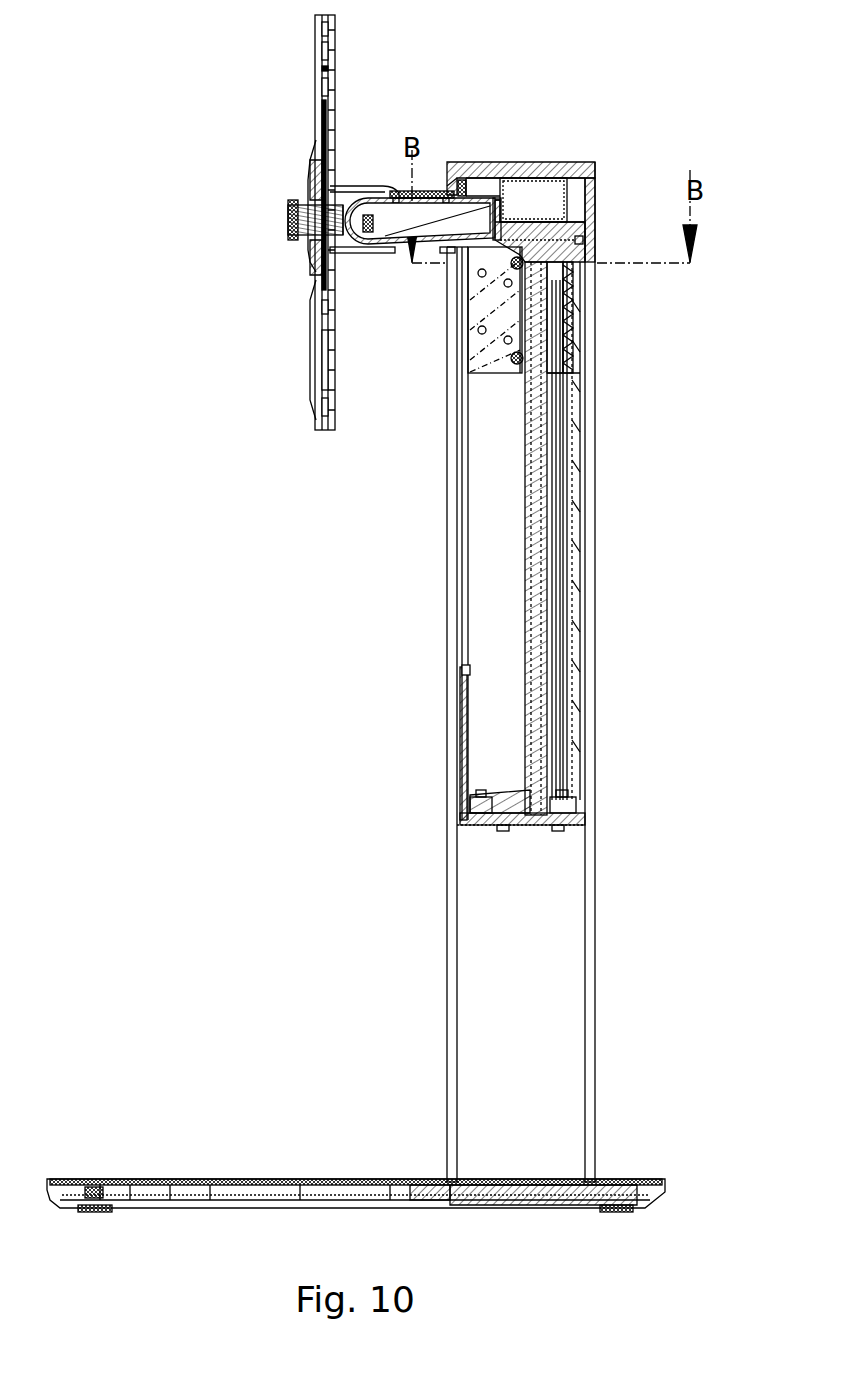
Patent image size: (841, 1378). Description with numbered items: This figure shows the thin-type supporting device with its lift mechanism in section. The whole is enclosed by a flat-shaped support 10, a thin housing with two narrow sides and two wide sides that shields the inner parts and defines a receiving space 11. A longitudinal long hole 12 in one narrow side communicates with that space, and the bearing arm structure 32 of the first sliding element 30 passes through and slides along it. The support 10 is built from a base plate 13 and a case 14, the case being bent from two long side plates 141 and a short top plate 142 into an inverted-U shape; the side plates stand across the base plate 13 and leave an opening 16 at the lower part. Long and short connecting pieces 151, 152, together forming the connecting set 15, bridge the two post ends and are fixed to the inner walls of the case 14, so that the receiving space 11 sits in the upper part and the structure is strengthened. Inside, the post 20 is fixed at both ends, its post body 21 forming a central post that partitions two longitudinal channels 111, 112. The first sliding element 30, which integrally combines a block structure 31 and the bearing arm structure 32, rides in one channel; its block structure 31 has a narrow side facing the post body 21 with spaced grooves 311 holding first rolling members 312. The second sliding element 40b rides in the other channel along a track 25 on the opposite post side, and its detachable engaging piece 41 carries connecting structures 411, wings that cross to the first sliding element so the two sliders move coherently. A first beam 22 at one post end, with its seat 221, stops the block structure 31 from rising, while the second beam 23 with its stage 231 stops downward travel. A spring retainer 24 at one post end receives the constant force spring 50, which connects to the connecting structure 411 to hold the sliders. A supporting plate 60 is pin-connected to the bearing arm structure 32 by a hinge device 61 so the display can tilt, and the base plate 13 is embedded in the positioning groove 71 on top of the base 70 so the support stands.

The flat-shaped support 10 is at (603, 125).
The receiving space 11 is at (604, 538).
The longitudinal channel 111 is at (495, 600).
The longitudinal channel 112 is at (665, 540).
The longitudinal long hole 12 is at (456, 560).
The base plate 13 is at (522, 1182).
The case 14 is at (462, 133).
The long side plate 141 is at (453, 178).
The short top plate 142 is at (525, 156).
The connecting pieces 15 is at (544, 546).
The long connecting piece 151 is at (462, 672).
The short connecting piece 152 is at (583, 240).
The opening 16 is at (525, 1030).
The post 20 is at (487, 485).
The post body 21 is at (522, 673).
The first beam 22 is at (570, 250).
The pivot seat 221 is at (497, 216).
The second beam 23 is at (470, 795).
The stage 231 is at (510, 790).
The spring retainer 24 is at (598, 230).
The track 25 is at (555, 405).
The first sliding element 30 is at (400, 351).
The block structure 31 is at (432, 354).
The groove 311 is at (478, 276).
The first rolling member 312 is at (504, 286).
The bearing arm structure 32 is at (388, 246).
The second sliding element 40b is at (538, 386).
The engaging piece 41 is at (576, 345).
The connecting structure 411 is at (514, 366).
The constant force spring 50 is at (538, 140).
The supporting plate 60 is at (292, 222).
The hinge device 61 is at (300, 193).
The base 70 is at (356, 1149).
The positioning groove 71 is at (442, 1186).